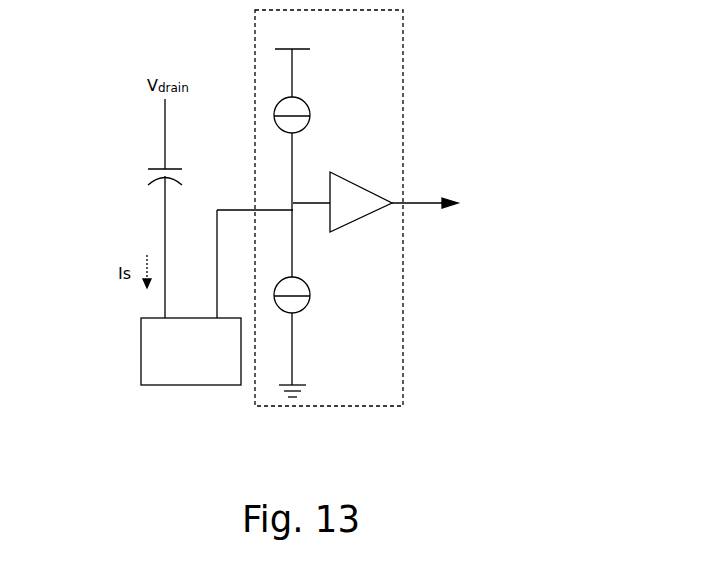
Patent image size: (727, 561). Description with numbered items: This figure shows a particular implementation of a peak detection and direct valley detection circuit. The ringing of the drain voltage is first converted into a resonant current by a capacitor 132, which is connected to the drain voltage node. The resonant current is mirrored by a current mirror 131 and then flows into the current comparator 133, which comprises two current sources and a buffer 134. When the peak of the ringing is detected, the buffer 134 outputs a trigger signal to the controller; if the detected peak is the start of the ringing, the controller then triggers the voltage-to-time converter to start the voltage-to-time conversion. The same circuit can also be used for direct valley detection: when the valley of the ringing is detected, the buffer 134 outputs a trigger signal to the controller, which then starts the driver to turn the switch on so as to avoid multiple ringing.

The current mirror 131 is at (147, 370).
The capacitor 132 is at (140, 175).
The current comparator 133 is at (255, 30).
The buffer 134 is at (368, 185).